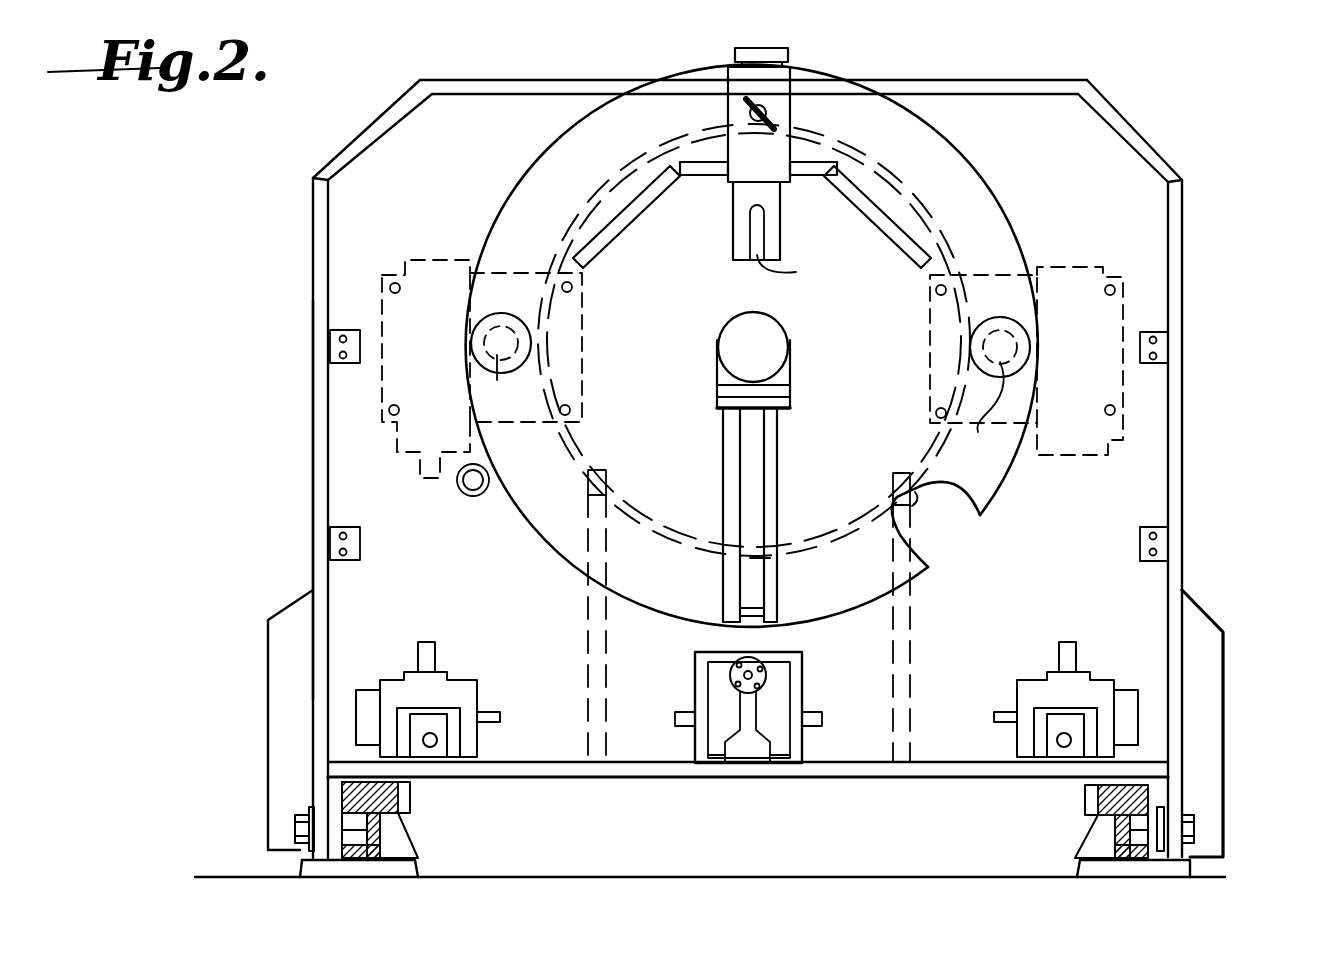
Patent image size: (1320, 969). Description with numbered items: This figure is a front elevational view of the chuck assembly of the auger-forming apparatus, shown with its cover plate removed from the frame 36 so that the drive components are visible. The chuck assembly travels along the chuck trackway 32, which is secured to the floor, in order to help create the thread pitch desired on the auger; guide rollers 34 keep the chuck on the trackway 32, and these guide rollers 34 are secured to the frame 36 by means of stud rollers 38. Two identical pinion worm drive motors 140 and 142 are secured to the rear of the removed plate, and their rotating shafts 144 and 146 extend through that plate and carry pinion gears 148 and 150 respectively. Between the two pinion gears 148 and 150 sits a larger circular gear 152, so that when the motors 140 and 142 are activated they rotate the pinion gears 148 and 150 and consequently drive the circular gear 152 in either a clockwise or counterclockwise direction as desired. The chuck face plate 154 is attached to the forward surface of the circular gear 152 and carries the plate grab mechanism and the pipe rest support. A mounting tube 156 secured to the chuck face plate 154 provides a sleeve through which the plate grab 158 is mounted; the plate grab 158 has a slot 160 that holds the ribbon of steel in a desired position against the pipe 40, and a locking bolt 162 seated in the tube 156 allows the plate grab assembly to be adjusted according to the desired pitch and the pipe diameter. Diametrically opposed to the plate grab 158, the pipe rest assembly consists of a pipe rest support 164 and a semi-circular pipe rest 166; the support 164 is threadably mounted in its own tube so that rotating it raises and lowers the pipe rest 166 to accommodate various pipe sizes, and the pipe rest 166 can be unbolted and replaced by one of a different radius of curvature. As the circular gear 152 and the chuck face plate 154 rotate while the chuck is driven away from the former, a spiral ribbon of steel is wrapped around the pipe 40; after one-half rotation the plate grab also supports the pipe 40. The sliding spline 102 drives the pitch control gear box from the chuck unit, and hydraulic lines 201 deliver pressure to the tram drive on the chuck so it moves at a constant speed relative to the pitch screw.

The chuck trackway 32 is at (380, 835).
The guide rollers 34 is at (345, 790).
The frame 36 is at (318, 482).
The stud rollers 38 is at (295, 825).
The pipe 40 is at (790, 340).
The sliding spline 102 is at (766, 677).
The pinion worm drive motor 140 is at (448, 364).
The pinion worm drive motor 142 is at (1103, 360).
The rotating shaft 144 is at (502, 386).
The rotating shaft 146 is at (979, 414).
The pinion gear 148 is at (514, 324).
The pinion gear 150 is at (1010, 323).
The circular gear 152 is at (923, 486).
The chuck face plate 154 is at (565, 545).
The mounting tube 156 is at (790, 120).
The plate grab 158 is at (780, 208).
The slot 160 is at (802, 273).
The locking bolt 162 is at (762, 108).
The pipe rest support 164 is at (727, 440).
The semi-circular pipe rest 166 is at (790, 387).
The hydraulic lines 201 is at (330, 340).